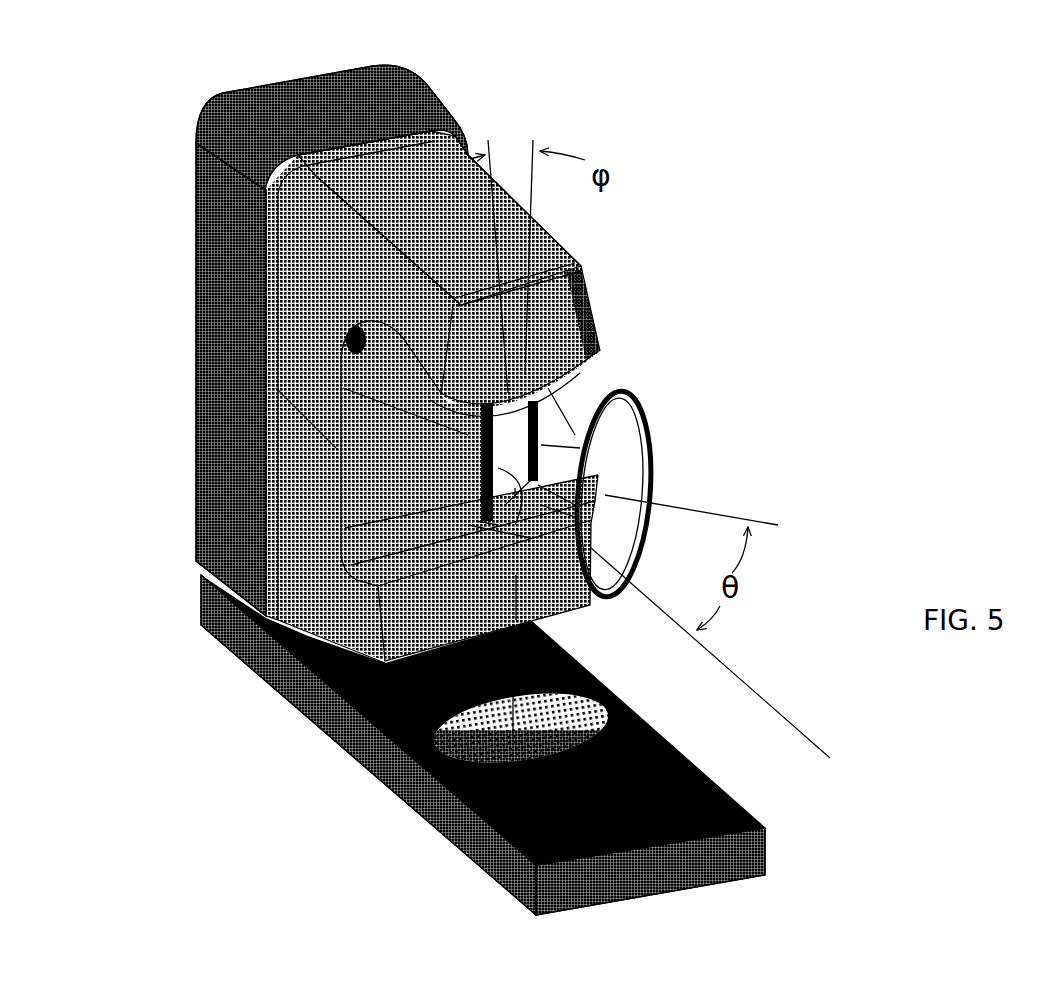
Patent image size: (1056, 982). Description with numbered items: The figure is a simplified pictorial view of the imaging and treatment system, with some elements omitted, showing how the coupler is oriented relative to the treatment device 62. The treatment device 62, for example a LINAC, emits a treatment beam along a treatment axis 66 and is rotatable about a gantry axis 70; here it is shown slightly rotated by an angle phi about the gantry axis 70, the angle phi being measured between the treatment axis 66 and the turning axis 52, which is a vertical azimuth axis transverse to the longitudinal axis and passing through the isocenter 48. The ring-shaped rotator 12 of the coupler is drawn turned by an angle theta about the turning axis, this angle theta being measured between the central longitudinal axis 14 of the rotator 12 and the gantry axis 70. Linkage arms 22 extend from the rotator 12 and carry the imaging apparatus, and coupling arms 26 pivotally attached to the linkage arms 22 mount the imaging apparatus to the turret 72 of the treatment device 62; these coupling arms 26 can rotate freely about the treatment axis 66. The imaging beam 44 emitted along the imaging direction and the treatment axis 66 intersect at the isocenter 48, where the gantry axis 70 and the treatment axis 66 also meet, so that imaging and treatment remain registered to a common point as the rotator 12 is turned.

The rotator 12 is at (633, 393).
The longitudinal axis 14 is at (723, 507).
The linkage arms 22 is at (567, 427).
The coupling arms 26 is at (473, 443).
The imaging beam 44 is at (470, 473).
The isocenter 48 is at (490, 518).
The turning axis 52 is at (528, 197).
The treatment device 62 is at (373, 90).
The treatment axis 66 is at (483, 207).
The gantry axis 70 is at (774, 695).
The turret 72 is at (435, 387).